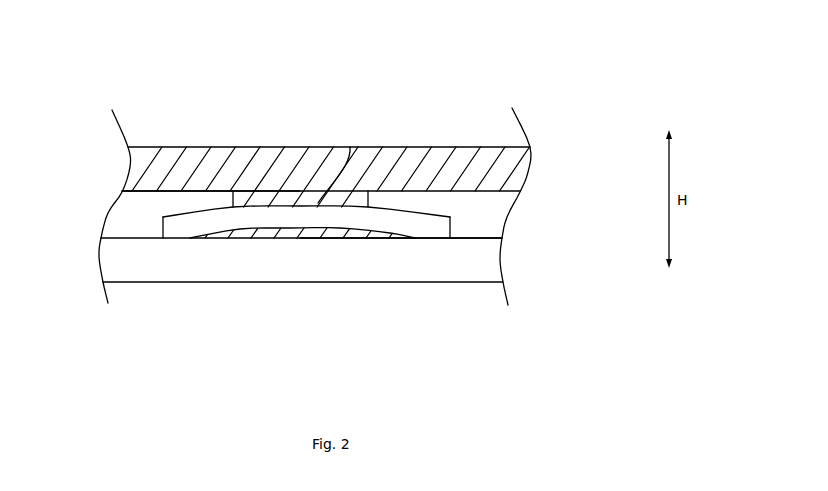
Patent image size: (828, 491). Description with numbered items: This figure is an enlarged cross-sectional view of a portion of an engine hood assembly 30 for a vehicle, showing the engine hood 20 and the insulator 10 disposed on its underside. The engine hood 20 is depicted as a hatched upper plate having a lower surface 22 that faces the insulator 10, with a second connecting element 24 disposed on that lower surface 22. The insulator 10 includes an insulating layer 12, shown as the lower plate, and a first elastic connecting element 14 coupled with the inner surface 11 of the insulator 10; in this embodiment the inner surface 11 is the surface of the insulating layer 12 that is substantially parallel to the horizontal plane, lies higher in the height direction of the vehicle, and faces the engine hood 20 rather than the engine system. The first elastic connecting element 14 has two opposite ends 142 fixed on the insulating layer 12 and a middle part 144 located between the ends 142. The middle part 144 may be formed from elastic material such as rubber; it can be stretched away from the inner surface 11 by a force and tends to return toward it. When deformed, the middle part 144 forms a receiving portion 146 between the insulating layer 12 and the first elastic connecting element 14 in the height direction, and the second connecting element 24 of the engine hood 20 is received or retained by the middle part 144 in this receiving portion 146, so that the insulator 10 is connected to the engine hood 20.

The engine hood assembly 30 is at (141, 77).
The engine hood 20 is at (465, 141).
The lower surface 22 is at (135, 190).
The second connecting element 24 is at (350, 147).
The insulator 10 is at (341, 280).
The inner surface 11 is at (473, 238).
The insulating layer 12 is at (331, 273).
The first elastic connecting element 14 is at (214, 246).
The end 142 is at (172, 228).
The middle part 144 is at (320, 224).
The receiving portion 146 is at (380, 238).